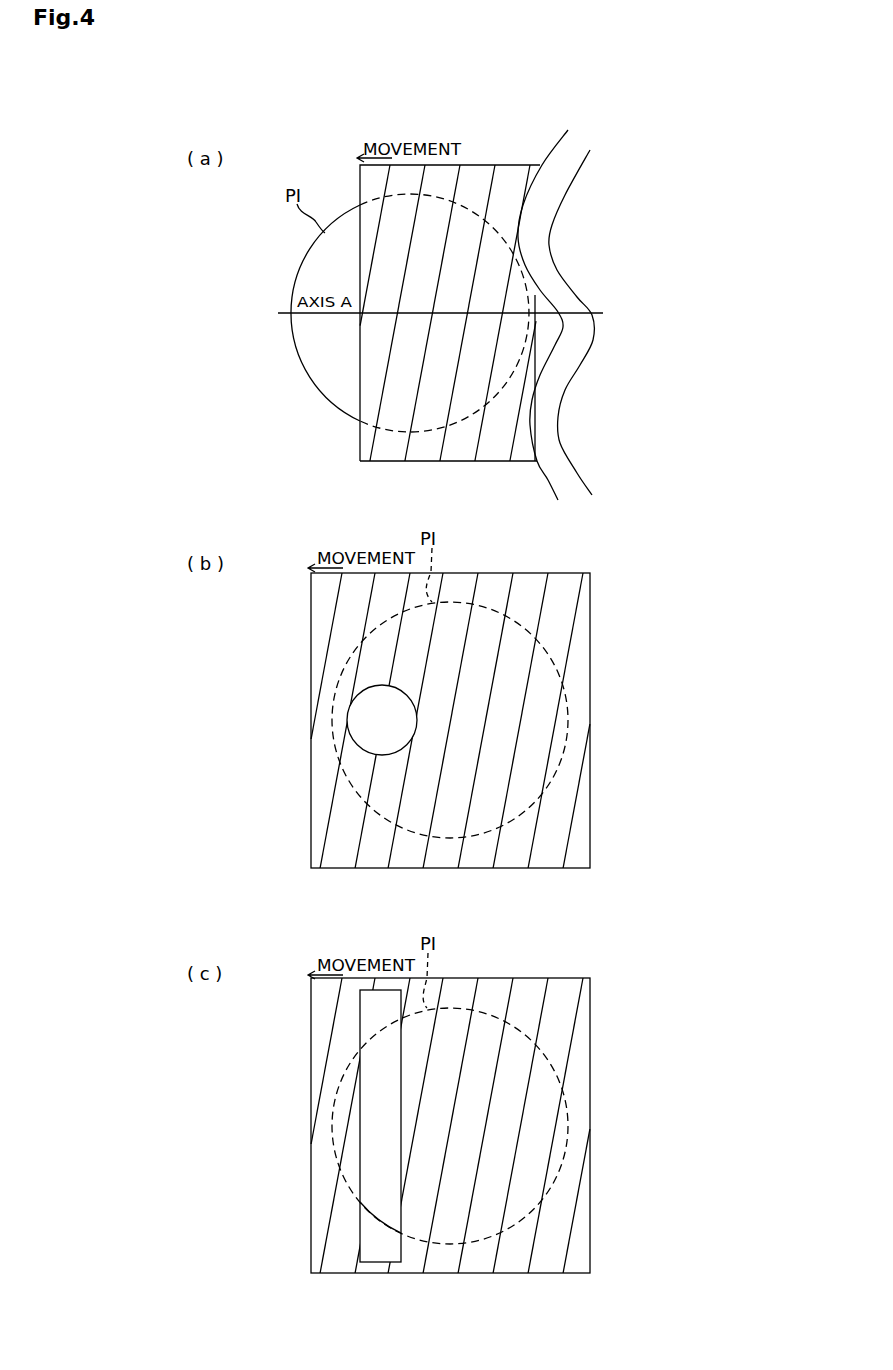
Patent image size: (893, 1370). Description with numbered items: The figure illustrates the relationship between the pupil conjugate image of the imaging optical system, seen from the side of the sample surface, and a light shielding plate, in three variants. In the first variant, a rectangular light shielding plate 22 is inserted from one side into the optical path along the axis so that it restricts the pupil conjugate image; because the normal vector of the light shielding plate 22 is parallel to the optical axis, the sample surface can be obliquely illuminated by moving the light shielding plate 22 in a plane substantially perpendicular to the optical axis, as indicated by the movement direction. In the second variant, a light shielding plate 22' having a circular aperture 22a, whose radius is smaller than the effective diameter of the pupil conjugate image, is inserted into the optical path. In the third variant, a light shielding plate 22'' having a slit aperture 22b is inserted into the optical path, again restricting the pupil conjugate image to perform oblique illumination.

The light shielding plate 22 is at (450, 285).
The light shielding plate 22' is at (450, 695).
The light shielding plate 22'' is at (450, 1100).
The circular aperture 22a is at (352, 711).
The slit aperture 22b is at (378, 990).